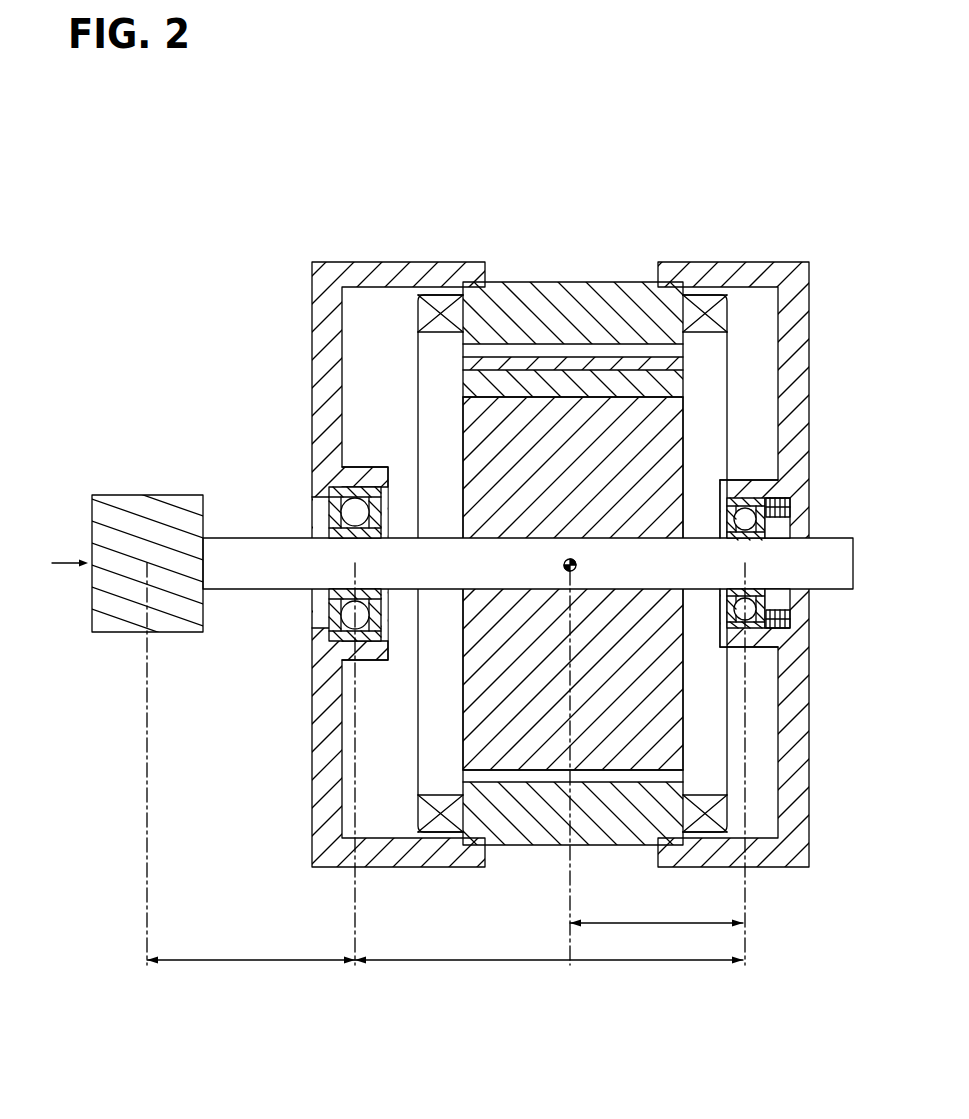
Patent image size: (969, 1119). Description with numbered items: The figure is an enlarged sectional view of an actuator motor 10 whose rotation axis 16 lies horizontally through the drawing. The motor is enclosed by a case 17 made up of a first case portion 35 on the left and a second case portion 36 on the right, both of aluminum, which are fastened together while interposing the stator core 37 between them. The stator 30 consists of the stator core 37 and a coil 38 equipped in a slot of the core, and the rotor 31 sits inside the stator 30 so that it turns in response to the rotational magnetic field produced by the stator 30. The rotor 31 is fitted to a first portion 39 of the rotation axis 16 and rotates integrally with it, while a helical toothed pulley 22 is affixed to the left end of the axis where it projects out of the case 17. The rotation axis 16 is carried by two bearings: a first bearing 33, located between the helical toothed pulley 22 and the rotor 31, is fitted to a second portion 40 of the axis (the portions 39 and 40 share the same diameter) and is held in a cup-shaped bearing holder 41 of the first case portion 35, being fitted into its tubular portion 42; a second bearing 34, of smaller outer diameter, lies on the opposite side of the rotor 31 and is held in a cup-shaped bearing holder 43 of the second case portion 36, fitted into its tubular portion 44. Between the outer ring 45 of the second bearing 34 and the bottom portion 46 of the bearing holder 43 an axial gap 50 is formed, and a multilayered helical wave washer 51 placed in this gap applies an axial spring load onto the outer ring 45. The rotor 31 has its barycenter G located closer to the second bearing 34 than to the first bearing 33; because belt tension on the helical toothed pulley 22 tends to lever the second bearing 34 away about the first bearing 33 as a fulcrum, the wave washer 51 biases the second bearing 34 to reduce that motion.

The motor 10 is at (283, 213).
The rotation axis 16 is at (253, 589).
The case 17 is at (763, 258).
The helical toothed pulley 22 is at (148, 495).
The stator 30 is at (537, 207).
The rotor 31 is at (510, 438).
The first bearing 33 is at (353, 512).
The second bearing 34 is at (750, 607).
The first case portion 35 is at (388, 262).
The second case portion 36 is at (731, 270).
The stator core 37 is at (540, 290).
The coil 38 is at (440, 300).
The portion (first portion) 39 is at (625, 555).
The portion (second portion) 40 is at (340, 655).
The bearing holder 41 is at (345, 478).
The tubular portion 42 is at (367, 475).
The bearing holder 43 is at (772, 637).
The tubular portion 44 is at (752, 490).
The outer ring 45 is at (755, 510).
The bottom portion 46 is at (798, 512).
The axial gap 50 is at (777, 520).
The multilayered helical wave washer 51 is at (792, 507).
The barycenter G is at (572, 570).